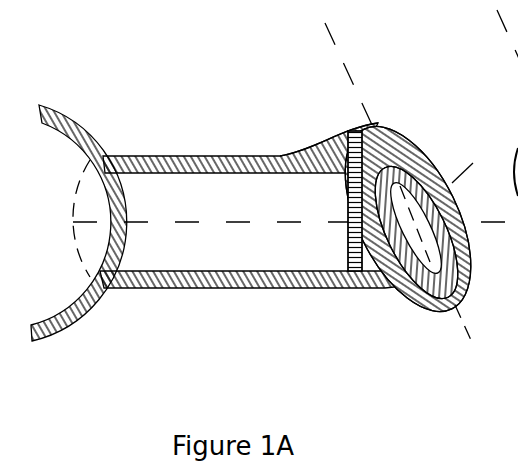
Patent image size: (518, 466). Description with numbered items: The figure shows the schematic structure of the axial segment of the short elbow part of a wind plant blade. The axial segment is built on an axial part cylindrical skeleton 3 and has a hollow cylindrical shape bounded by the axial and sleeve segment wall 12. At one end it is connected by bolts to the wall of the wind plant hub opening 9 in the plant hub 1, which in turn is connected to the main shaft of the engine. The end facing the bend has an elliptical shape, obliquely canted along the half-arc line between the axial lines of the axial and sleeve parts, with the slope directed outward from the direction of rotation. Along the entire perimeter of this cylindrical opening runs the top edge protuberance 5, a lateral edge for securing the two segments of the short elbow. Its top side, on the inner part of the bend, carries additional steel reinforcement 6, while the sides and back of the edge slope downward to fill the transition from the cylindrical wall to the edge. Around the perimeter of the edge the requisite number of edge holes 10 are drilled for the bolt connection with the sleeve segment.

The plant hub 1 is at (87, 317).
The axial part cylindrical skeleton 3 is at (274, 290).
The top edge protuberance 5 is at (363, 290).
The additional steel reinforcement 6 is at (332, 143).
The wind plant hub opening 9 is at (103, 153).
The edge holes 10 is at (517, 127).
The axial and sleeve segment wall 12 is at (431, 305).